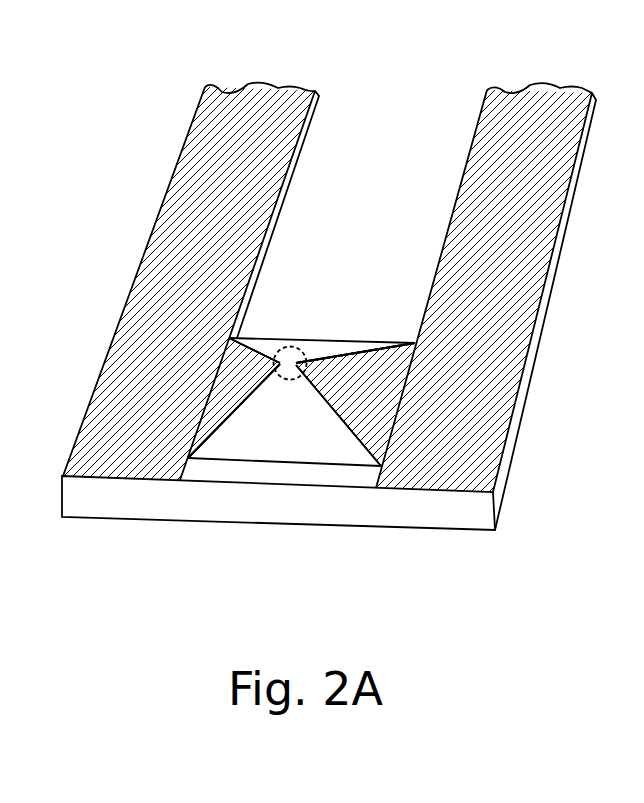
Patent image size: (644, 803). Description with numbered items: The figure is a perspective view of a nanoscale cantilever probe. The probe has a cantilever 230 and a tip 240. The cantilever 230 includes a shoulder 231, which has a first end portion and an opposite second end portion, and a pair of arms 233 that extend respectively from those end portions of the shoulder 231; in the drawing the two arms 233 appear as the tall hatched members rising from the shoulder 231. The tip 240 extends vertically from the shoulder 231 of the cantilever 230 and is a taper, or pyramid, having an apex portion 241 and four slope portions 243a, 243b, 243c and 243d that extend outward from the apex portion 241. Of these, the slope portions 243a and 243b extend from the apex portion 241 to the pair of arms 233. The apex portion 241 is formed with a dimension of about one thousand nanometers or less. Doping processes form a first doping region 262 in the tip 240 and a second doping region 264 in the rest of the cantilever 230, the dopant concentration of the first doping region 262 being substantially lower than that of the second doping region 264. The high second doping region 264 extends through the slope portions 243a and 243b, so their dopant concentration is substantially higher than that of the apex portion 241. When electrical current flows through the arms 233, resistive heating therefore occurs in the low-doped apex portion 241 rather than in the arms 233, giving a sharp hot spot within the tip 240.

The cantilever 230 is at (85, 147).
The shoulder 231 is at (340, 477).
The arms 233 is at (255, 102).
The tip 240 is at (335, 318).
The apex portion 241 is at (292, 379).
The slope portion 243a is at (373, 437).
The slope portion 243b is at (217, 417).
The slope portion 243c is at (278, 428).
The slope portion 243d is at (272, 345).
The first doping region 262 is at (323, 350).
The second doping region 264 is at (232, 388).